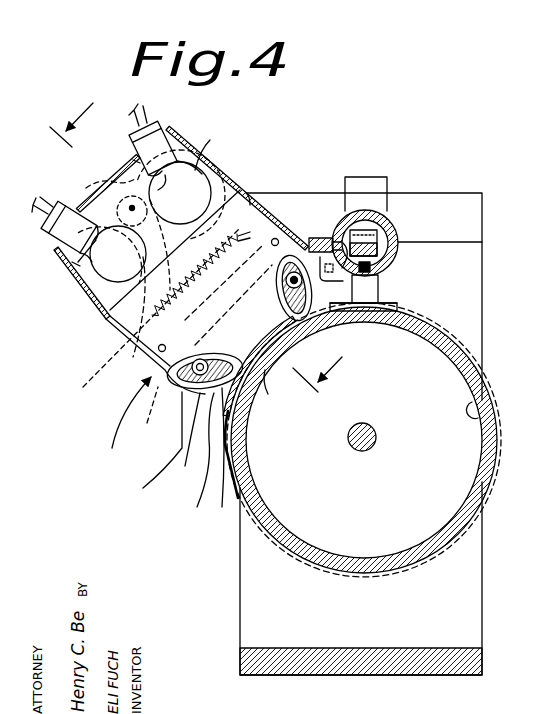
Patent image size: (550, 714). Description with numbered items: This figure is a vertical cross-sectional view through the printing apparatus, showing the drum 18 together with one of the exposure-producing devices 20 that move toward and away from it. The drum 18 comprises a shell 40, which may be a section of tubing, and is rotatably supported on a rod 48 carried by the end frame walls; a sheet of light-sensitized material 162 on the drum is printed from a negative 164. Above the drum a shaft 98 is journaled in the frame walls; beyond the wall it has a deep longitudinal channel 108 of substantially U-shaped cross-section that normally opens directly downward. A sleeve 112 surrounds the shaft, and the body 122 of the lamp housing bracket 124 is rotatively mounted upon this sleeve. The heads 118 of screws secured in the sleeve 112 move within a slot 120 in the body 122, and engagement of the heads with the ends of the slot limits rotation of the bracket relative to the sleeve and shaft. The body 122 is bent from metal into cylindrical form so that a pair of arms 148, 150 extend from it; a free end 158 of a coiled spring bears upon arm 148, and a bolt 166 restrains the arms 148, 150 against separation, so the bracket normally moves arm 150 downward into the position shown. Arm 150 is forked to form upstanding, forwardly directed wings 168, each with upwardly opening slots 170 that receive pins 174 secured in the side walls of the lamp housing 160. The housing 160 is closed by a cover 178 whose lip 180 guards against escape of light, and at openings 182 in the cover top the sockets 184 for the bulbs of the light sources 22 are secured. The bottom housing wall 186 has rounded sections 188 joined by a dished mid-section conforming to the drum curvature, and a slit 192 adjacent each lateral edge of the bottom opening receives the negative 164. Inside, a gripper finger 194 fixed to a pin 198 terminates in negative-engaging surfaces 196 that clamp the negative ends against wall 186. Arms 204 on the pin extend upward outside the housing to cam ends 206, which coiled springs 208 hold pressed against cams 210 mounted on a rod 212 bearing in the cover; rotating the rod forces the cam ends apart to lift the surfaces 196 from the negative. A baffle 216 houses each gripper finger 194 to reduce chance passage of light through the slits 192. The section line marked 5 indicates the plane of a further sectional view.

The section line 5- 5 is at (200, 241).
The drum 18 is at (472, 352).
The exposure-producing device 20 is at (249, 186).
The light sources 22 is at (217, 164).
The shell 40 is at (485, 414).
The rod 48 is at (374, 429).
The shaft 98 is at (482, 250).
The channel 108 is at (391, 215).
The sleeve 112 is at (387, 219).
The screw heads 118 is at (382, 294).
The slot 120 is at (400, 262).
The body 122 is at (374, 188).
The lamp housing bracket 124 is at (406, 227).
The arm 148 is at (358, 322).
The arm 150 is at (311, 236).
The free end 158 is at (324, 236).
The lamp housing 160 is at (123, 425).
The light-sensitized material 162 is at (373, 575).
The negative 164 is at (292, 343).
The bolt 166 is at (313, 236).
The wings 168 is at (146, 314).
The slots 170 is at (259, 199).
The pins 174 is at (262, 268).
The cover 178 is at (196, 186).
The lip 180 is at (100, 314).
The openings 182 is at (135, 160).
The sockets 184 is at (155, 136).
The housing wall 186 is at (223, 454).
The rounded sections 188 is at (193, 459).
The slit 192 is at (267, 380).
The gripper finger 194 is at (206, 362).
The negative-engaging surfaces 196 is at (248, 410).
The pin 198 is at (184, 439).
The arms 204 is at (153, 416).
The cam ends 206 is at (90, 186).
The coiled springs 208 is at (236, 306).
The cams 210 is at (82, 290).
The rod 212 is at (130, 213).
The baffle 216 is at (155, 450).